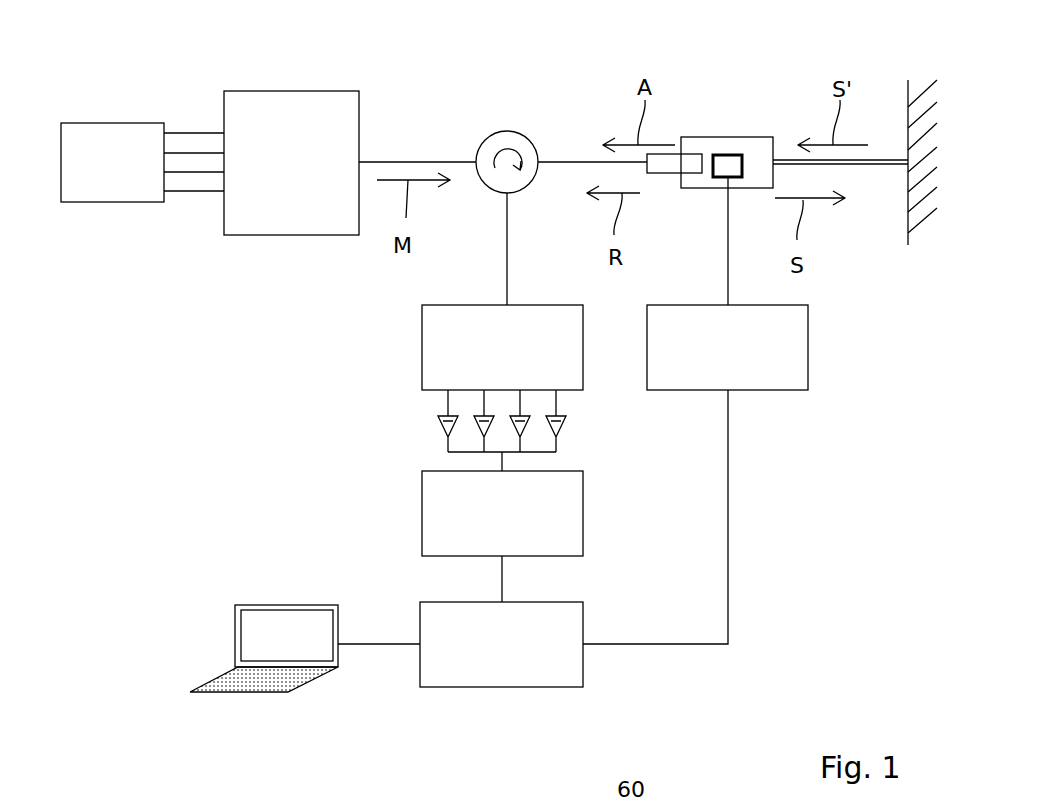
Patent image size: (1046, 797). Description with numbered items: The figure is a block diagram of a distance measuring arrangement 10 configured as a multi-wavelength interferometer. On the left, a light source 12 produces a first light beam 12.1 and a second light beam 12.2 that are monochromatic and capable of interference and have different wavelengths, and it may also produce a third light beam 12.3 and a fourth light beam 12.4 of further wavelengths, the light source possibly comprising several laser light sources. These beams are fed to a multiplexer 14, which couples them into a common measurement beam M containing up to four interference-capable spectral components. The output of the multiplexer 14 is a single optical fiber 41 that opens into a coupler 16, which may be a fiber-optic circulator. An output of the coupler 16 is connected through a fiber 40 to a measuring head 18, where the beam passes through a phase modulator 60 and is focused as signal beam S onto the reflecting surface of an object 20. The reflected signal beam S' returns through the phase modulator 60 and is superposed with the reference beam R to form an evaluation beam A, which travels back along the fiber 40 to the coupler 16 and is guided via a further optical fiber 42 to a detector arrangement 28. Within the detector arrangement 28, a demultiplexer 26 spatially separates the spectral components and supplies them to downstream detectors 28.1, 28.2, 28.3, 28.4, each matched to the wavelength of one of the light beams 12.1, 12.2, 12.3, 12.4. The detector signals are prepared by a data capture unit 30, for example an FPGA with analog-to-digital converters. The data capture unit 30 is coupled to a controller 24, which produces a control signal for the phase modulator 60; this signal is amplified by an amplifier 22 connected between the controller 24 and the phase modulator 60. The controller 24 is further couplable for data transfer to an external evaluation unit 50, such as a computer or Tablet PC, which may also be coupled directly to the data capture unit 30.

The distance measuring arrangement 10 is at (620, 103).
The light source 12 is at (82, 133).
The first light beam 12.1 is at (172, 133).
The second light beam 12.2 is at (200, 153).
The third light beam 12.3 is at (185, 172).
The fourth light beam 12.4 is at (220, 191).
The multiplexer 14 is at (318, 108).
The coupler 16 is at (507, 131).
The measuring head 18 is at (762, 108).
The object 20 is at (906, 245).
The amplifier 22 is at (782, 380).
The controller 24 is at (505, 687).
The demultiplexer 26 is at (422, 320).
The detector arrangement 28 is at (417, 430).
The first detector 28.1 is at (445, 425).
The second detector 28.2 is at (478, 422).
The third detector 28.3 is at (525, 425).
The fourth detector 28.4 is at (560, 425).
The data capture unit 30 is at (422, 503).
The fiber 40 is at (560, 162).
The optical fiber 41 is at (432, 162).
The optical fiber 42 is at (507, 243).
The external evaluation unit 50 is at (258, 692).
The phase modulator 60 is at (726, 148).